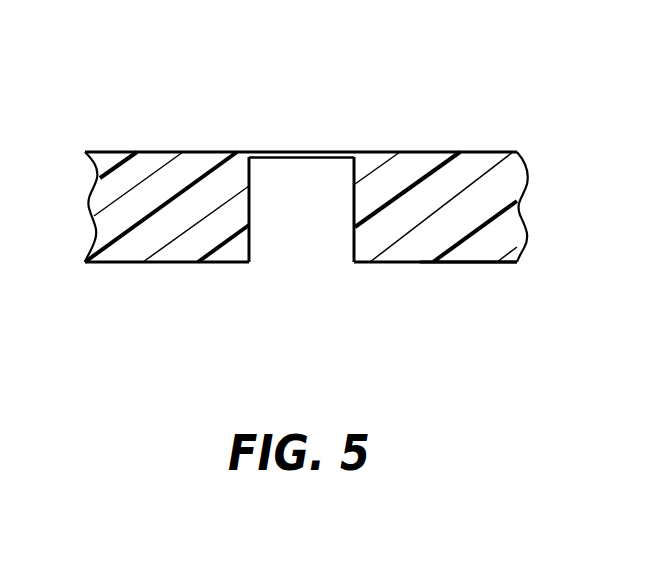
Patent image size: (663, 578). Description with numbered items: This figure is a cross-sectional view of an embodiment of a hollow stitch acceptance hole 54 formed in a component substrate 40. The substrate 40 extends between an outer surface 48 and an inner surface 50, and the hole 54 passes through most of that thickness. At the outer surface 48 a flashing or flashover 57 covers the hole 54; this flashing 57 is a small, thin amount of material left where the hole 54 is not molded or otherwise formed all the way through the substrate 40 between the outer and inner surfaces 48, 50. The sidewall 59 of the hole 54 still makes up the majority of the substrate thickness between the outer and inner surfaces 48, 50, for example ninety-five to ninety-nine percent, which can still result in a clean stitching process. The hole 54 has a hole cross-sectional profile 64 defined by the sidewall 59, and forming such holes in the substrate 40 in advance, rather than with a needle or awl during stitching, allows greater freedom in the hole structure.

The component substrate 40 is at (390, 91).
The outer surface 48 is at (446, 152).
The inner surface 50 is at (460, 263).
The hollow stitch acceptance hole 54 is at (293, 230).
The flashing 57 is at (290, 150).
The sidewall 59 is at (250, 243).
The hole cross-sectional profile 64 is at (351, 245).